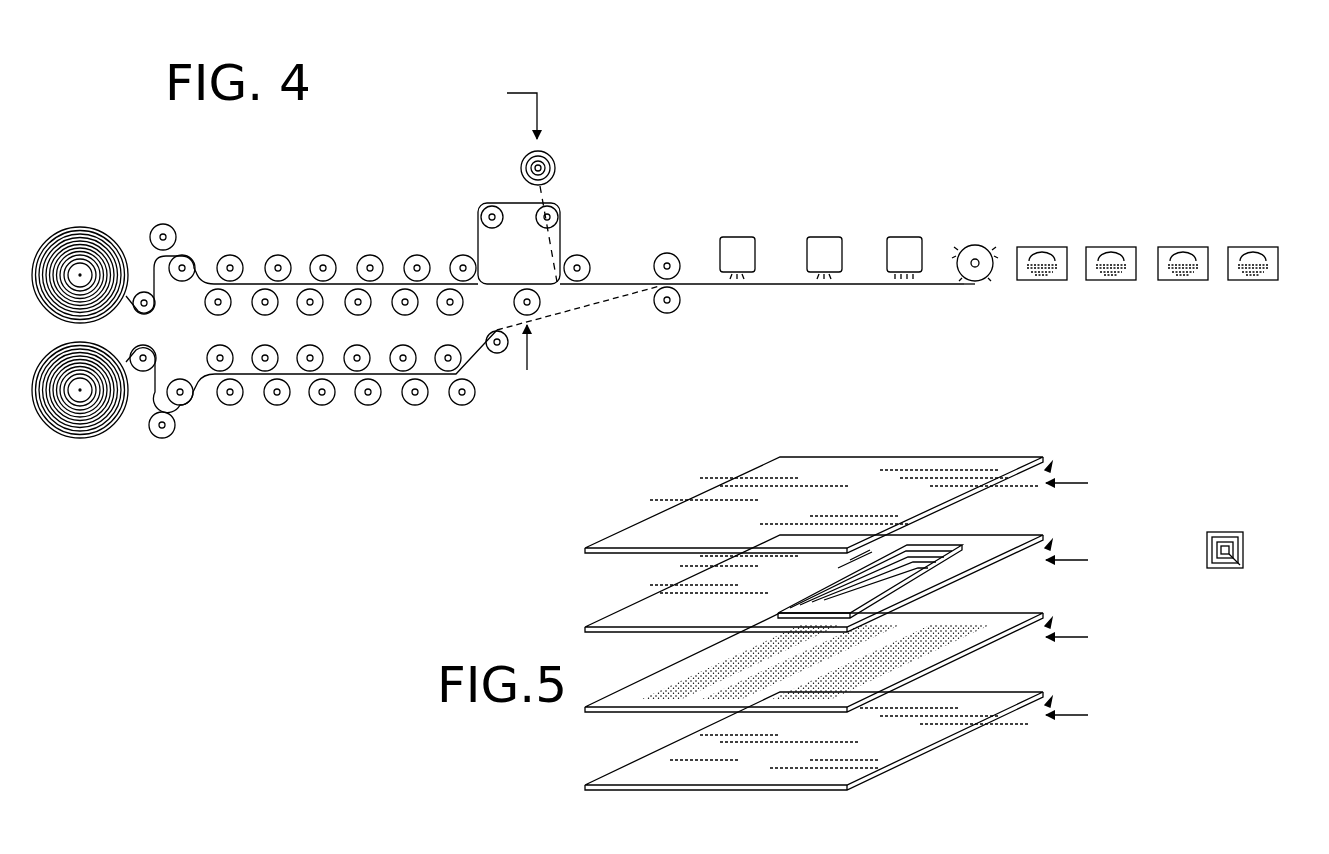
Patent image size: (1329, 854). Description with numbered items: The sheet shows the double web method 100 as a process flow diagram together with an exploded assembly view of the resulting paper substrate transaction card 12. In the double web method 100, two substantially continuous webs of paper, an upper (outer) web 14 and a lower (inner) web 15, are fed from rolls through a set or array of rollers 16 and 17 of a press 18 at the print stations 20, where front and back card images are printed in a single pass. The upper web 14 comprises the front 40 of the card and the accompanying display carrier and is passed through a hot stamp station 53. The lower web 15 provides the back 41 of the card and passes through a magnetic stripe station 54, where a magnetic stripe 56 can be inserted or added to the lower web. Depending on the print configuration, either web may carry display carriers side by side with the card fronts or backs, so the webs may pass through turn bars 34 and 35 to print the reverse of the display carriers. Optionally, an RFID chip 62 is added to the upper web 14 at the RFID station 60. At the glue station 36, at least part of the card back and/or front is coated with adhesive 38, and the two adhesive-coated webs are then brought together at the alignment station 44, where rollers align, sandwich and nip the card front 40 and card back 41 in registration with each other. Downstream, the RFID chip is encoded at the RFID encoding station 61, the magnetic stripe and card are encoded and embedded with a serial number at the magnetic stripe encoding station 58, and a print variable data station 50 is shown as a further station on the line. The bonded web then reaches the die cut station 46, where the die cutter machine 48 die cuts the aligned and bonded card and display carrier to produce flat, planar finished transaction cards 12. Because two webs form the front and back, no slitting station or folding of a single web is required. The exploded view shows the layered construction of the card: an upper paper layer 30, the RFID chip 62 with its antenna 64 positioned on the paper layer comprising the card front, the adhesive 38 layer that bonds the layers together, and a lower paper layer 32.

In FIG. 4, the paper substrate transaction card 12 is at (1117, 281).
In FIG. 4, the upper web of paper 14 is at (80, 221).
In FIG. 4, the lower web of paper 15 is at (83, 441).
In FIG. 4, the rollers 16 is at (240, 258).
In FIG. 4, the rollers 17 is at (210, 352).
In FIG. 4, the press 18 is at (331, 218).
In FIG. 4, the print stations 20 is at (467, 500).
In FIG. 5, the paper layer 30 is at (836, 504).
In FIG. 5, the paper layer 32 is at (822, 797).
In FIG. 4, the turn bar 34 is at (459, 243).
In FIG. 4, the turn bar 35 is at (311, 365).
In FIG. 4, the glue station 36 is at (549, 351).
In FIG. 4, the adhesive 38 is at (527, 346).
In FIG. 5, the adhesive 38 is at (942, 663).
In FIG. 4, the card front 40 is at (762, 244).
In FIG. 4, the card back 41 is at (633, 302).
In FIG. 4, the alignment station 44 is at (667, 246).
In FIG. 4, the die cut station 46 is at (977, 238).
In FIG. 4, the die cutter machine 48 is at (975, 283).
In FIG. 4, the print variable data station 50 is at (903, 232).
In FIG. 4, the hot stamp station 53 is at (176, 226).
In FIG. 4, the magnetic stripe station 54 is at (172, 442).
In FIG. 4, the magnetic stripe 56 is at (166, 440).
In FIG. 4, the magnetic stripe encoding station 58 is at (823, 232).
In FIG. 4, the RFID station 60 is at (450, 88).
In FIG. 4, the RFID encoding station 61 is at (737, 232).
In FIG. 4, the RFID chip 62 is at (538, 120).
In FIG. 5, the RFID chip 62 is at (812, 588).
In FIG. 4, the antenna 64 is at (549, 147).
In FIG. 5, the antenna 64 is at (975, 554).
In FIG. 4, the double web method 100 is at (393, 186).